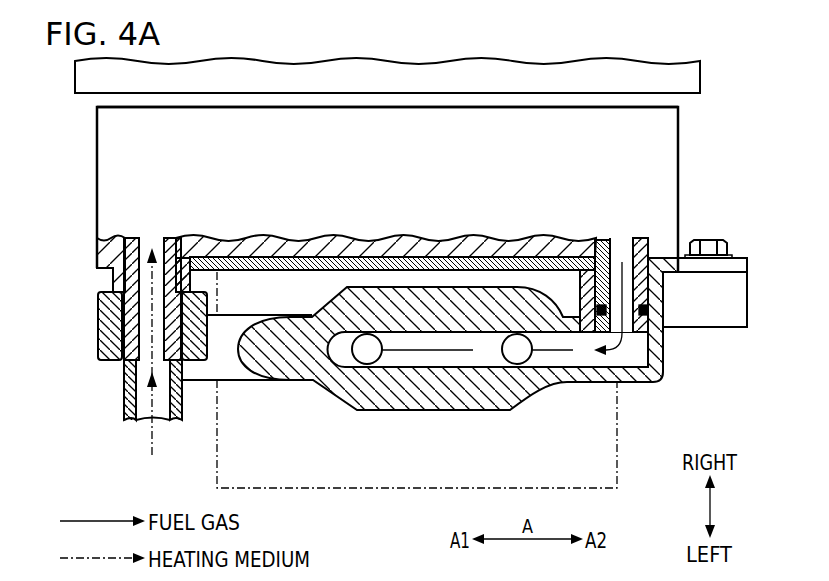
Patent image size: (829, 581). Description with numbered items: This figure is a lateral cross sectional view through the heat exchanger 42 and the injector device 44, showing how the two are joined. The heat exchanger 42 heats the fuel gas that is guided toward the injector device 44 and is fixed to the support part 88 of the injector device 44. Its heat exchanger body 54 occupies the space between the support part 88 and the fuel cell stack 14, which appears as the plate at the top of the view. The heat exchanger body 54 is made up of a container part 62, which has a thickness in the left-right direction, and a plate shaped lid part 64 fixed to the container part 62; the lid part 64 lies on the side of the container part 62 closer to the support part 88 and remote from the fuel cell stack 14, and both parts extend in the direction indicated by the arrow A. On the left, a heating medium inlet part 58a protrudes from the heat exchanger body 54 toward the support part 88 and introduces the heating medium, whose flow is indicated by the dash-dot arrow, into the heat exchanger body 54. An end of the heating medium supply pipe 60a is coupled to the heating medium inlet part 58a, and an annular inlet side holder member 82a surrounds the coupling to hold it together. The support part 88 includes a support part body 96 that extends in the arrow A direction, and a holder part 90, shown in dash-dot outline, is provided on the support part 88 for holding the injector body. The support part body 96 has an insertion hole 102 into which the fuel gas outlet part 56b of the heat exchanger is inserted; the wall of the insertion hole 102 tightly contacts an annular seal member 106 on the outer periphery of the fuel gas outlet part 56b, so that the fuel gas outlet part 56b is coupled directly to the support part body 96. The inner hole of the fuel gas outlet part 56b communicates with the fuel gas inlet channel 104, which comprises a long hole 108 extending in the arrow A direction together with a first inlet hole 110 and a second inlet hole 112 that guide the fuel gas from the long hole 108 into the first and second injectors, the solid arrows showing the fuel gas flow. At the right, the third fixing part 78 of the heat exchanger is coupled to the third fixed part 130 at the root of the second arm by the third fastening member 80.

The fuel cell stack 14 is at (87, 85).
The heat exchanger 42 is at (555, 97).
The injector device 44 is at (183, 275).
The heat exchanger body 54 is at (684, 125).
The fuel gas outlet part 56b is at (643, 285).
The heating medium inlet part 58a is at (138, 351).
The heating medium supply pipe 60a is at (124, 405).
The container part 62 is at (102, 173).
The lid part 64 is at (115, 266).
The third fixing part 78 is at (738, 265).
The third fastening member 80 is at (708, 242).
The inlet side holder member 82a is at (110, 353).
The support part 88 is at (116, 297).
The holder part 90 is at (216, 459).
The support part body 96 is at (443, 395).
The insertion hole 102 is at (608, 287).
The fuel gas inlet channel 104 is at (648, 346).
The annular seal member 106 is at (648, 311).
The long hole 108 is at (632, 370).
The first inlet hole 110 is at (365, 362).
The second inlet hole 112 is at (515, 365).
The third fixed part 130 is at (737, 320).